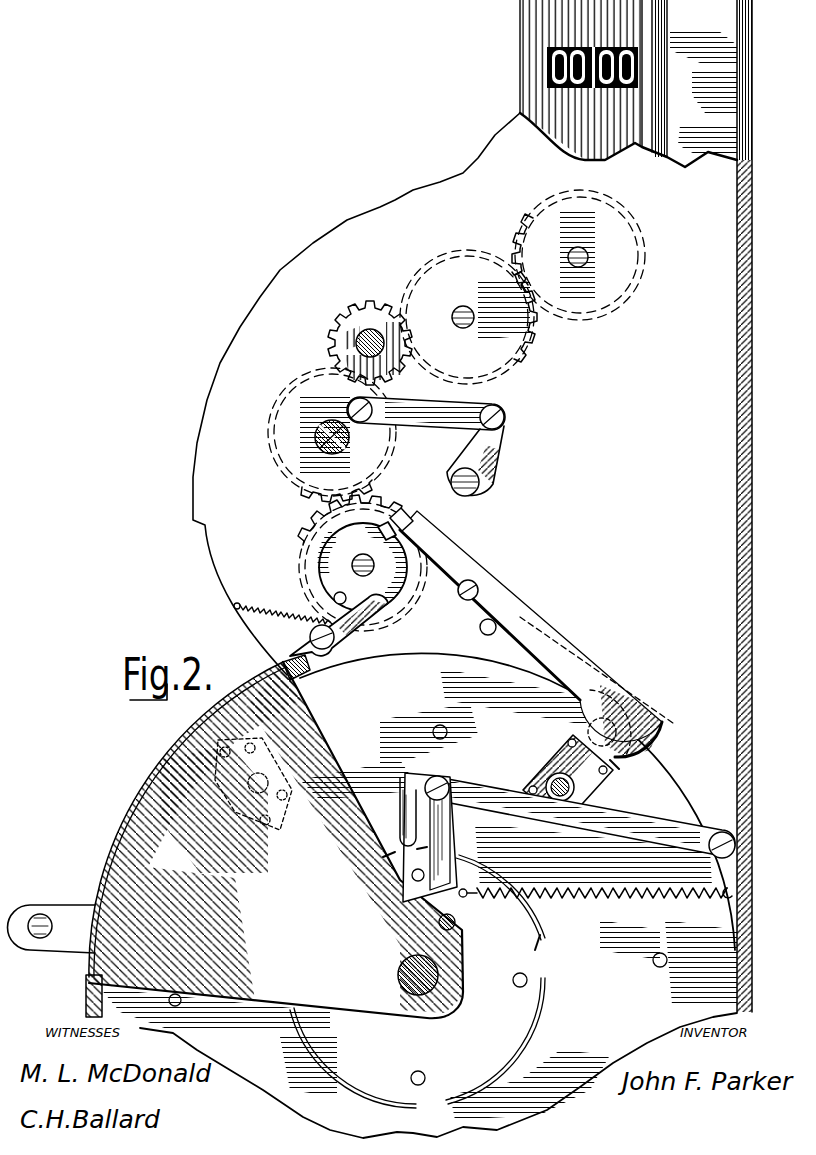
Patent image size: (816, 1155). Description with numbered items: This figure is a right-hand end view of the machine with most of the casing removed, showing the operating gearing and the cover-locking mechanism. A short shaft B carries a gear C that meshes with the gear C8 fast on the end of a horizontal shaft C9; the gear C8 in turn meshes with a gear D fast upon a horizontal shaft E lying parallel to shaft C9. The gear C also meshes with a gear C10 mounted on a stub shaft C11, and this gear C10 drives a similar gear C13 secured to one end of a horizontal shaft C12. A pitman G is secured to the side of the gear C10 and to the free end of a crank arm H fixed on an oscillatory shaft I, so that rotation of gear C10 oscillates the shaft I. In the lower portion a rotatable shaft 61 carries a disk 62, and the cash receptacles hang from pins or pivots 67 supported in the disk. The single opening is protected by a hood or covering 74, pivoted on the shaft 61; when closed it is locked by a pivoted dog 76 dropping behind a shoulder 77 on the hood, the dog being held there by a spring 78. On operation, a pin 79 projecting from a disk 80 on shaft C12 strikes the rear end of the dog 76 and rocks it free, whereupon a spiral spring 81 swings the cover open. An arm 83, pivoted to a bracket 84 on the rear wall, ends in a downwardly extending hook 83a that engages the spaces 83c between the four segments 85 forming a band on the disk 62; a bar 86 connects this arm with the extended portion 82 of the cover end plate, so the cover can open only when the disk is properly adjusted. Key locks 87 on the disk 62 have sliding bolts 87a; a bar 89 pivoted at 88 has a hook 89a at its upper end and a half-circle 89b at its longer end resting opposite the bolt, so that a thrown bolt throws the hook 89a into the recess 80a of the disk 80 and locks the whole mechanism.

The short shaft B is at (355, 345).
The gear C is at (370, 343).
The gear C8 is at (468, 317).
The horizontal shaft C9 is at (458, 322).
The gear D is at (578, 255).
The horizontal shaft E is at (590, 259).
The gear C10 is at (332, 435).
The stub shaft C11 is at (318, 443).
The pitman G is at (430, 424).
The crank arm H is at (483, 461).
The oscillatory shaft I is at (480, 483).
The recess 80a is at (384, 530).
The hook 89a is at (404, 514).
The gear C13 is at (306, 549).
The horizontal shaft C12 is at (352, 567).
The disk 80 is at (362, 567).
The pin 79 is at (333, 598).
The spring 78 is at (266, 619).
The pivoted dog 76 is at (345, 641).
The shoulder 77 is at (284, 665).
The pivot 88 is at (473, 584).
The bar 89 is at (515, 658).
The half circle 89b is at (658, 744).
The pin or pivot 67 is at (449, 728).
The key lock 87 is at (568, 780).
The sliding bolt 87a is at (627, 771).
The hook 83a is at (398, 822).
The bar 86 is at (430, 837).
The arm 83 is at (580, 816).
The bracket 84 is at (721, 832).
The spaces 83c is at (541, 956).
The spiral spring 81 is at (617, 898).
The extended portion 82 is at (454, 909).
The segments 85 is at (541, 915).
The rotatable shaft 61 is at (397, 979).
The disk 62 is at (418, 895).
The covering 74 is at (236, 840).